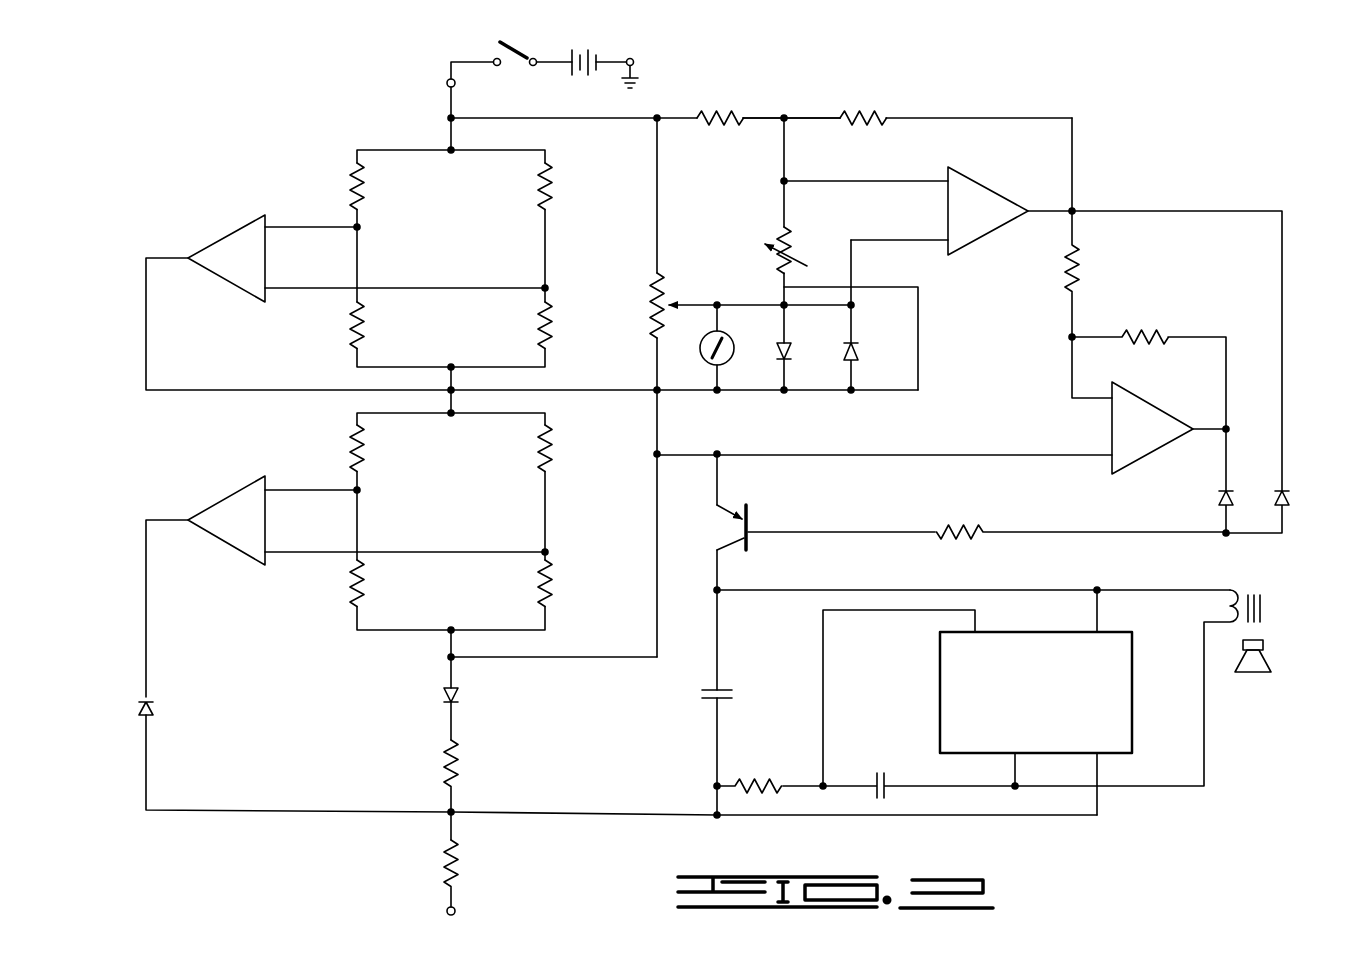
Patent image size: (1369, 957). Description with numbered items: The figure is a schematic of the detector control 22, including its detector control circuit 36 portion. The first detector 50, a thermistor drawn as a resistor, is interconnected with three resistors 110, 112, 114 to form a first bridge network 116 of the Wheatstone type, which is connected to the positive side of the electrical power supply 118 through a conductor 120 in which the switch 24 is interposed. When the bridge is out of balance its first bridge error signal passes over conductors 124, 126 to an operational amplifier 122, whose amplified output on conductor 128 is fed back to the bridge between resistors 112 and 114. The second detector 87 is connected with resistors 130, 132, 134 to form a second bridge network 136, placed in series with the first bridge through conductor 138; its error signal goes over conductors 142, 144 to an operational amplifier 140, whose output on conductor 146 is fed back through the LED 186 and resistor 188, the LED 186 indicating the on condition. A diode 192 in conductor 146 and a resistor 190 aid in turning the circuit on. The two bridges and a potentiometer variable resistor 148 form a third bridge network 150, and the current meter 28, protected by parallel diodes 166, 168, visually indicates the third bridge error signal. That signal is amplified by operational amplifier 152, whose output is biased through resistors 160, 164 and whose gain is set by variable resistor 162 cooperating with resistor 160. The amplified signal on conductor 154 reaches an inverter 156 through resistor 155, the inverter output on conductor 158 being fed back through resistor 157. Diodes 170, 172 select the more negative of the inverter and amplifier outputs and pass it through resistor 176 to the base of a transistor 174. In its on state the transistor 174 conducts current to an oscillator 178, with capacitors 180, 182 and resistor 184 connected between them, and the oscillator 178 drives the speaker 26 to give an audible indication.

The detector control 22 is at (808, 93).
The switch 24 is at (514, 69).
The speaker 26 is at (1272, 643).
The current meter 28 is at (703, 353).
The detector control circuit 36 is at (1095, 163).
The first detector 50 is at (352, 170).
The second detector 87 is at (352, 438).
The resistor 110 is at (553, 186).
The resistor 112 is at (542, 318).
The resistor 114 is at (352, 330).
The first bridge network 116 is at (405, 182).
The electrical power supply 118 is at (590, 58).
The conductor 120 is at (452, 135).
The operational amplifier 122 is at (234, 228).
The conductor 124 is at (296, 232).
The conductor 126 is at (388, 288).
The conductor 128 is at (146, 303).
The resistor 130 is at (553, 446).
The resistor 132 is at (553, 589).
The resistor 134 is at (352, 590).
The second bridge network 136 is at (400, 603).
The conductor 138 is at (452, 403).
The operational amplifier 140 is at (234, 490).
The conductor 142 is at (296, 494).
The conductor 144 is at (406, 552).
The conductor 146 is at (146, 666).
The potentiometer variable resistor 148 is at (673, 289).
The third bridge network 150 is at (675, 270).
The operational amplifier 152 is at (986, 188).
The conductor 154 is at (1052, 210).
The resistor 155 is at (1080, 266).
The inverter 156 is at (1145, 398).
The resistor 157 is at (1144, 335).
The conductor 158 is at (1212, 428).
The resistor 160 is at (860, 112).
The variable resistor 162 is at (801, 244).
The resistor 164 is at (718, 113).
The diode 166 is at (790, 346).
The diode 168 is at (857, 362).
The diode 170 is at (1218, 506).
The diode 172 is at (1287, 506).
The transistor 174 is at (760, 505).
The resistor 176 is at (960, 527).
The oscillator 178 is at (1073, 760).
The capacitor 180 is at (712, 701).
The capacitor 182 is at (871, 782).
The resistor 184 is at (757, 780).
The LED 186 is at (460, 694).
The resistor 188 is at (462, 763).
The resistor 190 is at (460, 863).
The diode 192 is at (156, 703).